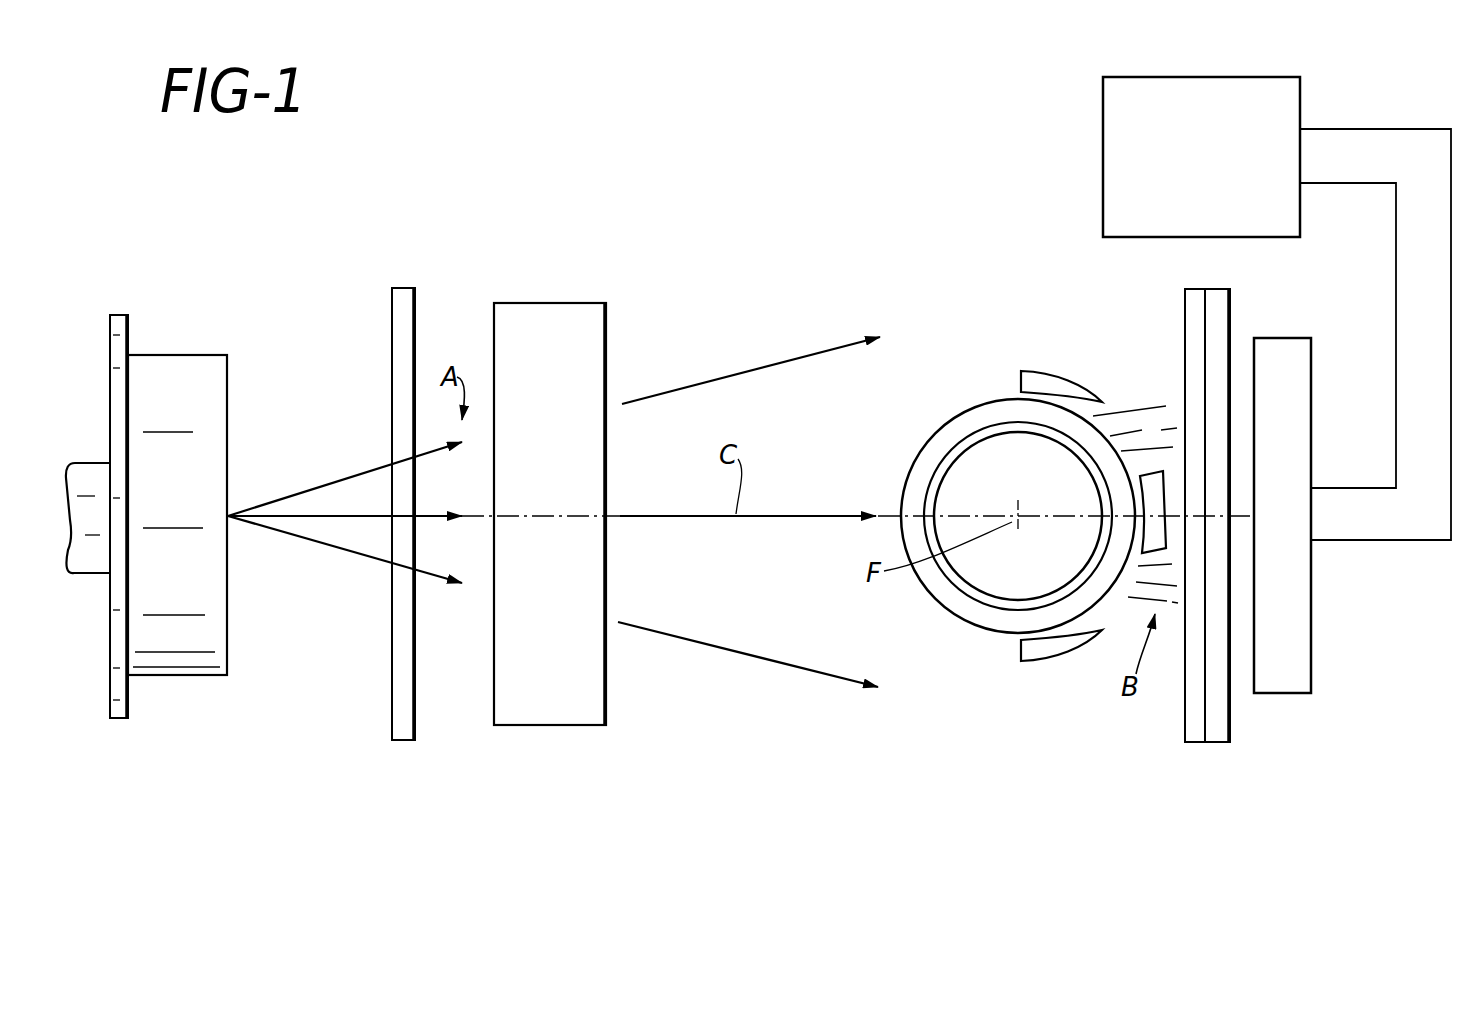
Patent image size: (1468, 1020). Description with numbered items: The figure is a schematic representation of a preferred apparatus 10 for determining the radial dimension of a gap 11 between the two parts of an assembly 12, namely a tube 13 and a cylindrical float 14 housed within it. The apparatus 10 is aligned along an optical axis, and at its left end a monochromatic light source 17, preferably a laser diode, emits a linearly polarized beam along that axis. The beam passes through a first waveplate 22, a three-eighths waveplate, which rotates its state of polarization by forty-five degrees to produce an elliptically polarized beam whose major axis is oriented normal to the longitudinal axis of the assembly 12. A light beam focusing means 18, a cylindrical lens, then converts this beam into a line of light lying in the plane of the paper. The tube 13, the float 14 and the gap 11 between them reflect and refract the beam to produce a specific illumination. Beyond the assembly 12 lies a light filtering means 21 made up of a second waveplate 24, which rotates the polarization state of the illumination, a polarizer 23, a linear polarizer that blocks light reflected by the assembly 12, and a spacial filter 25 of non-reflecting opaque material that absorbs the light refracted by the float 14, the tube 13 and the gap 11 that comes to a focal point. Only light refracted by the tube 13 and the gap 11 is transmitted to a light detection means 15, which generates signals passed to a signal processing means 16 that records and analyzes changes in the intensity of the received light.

The apparatus 10 is at (647, 266).
The gap 11 is at (952, 452).
The assembly 12 is at (984, 382).
The tube 13 is at (1097, 420).
The cylindrical float 14 is at (984, 570).
The light detection means 15 is at (1312, 663).
The signal processing means 16 is at (1103, 118).
The monochromatic light source 17 is at (182, 355).
The light beam focusing means 18 is at (553, 727).
The light filtering means 21 is at (1175, 563).
The first waveplate 22 is at (400, 742).
The polarizer 23 is at (1187, 742).
The second waveplate 24 is at (1250, 539).
The spacial filter 25 is at (1058, 377).